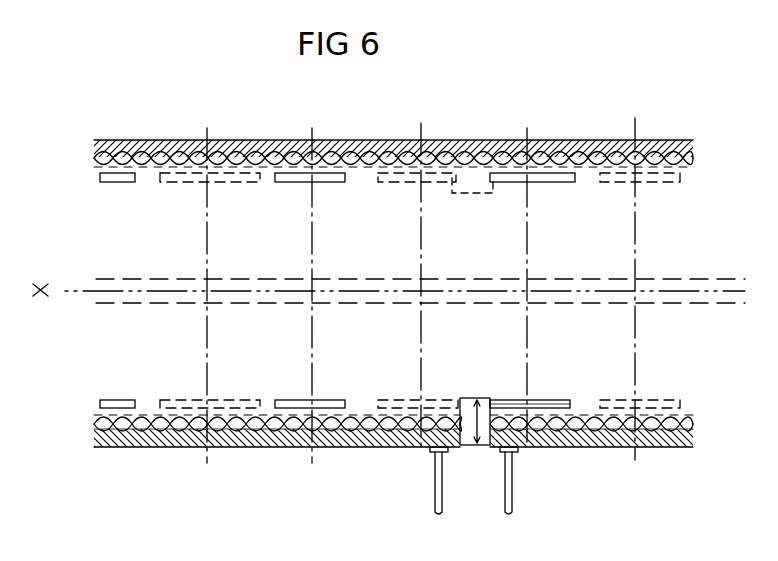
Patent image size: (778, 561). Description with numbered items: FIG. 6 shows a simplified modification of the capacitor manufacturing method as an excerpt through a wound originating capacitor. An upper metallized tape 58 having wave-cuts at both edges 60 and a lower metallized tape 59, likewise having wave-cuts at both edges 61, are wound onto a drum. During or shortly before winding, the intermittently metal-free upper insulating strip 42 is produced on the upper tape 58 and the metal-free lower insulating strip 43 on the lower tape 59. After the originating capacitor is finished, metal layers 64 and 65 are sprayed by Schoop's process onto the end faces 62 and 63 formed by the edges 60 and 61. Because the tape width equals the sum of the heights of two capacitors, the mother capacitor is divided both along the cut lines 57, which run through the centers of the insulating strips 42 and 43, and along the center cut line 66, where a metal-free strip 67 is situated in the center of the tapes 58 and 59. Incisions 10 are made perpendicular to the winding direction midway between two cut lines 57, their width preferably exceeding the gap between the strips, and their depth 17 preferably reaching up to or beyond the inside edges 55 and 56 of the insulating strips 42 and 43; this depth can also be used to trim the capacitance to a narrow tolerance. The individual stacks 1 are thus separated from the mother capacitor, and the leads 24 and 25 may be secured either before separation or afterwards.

The stack 1 is at (530, 346).
The incision 10 is at (470, 192).
The depth of the incision 17 is at (468, 398).
The lead 24 is at (440, 510).
The lead 25 is at (510, 508).
The upper insulating strip 42 is at (560, 183).
The lower insulating strip 43 is at (620, 184).
The inside edge of the upper insulating strip 55 is at (507, 402).
The inside edge of the lower insulating strip 56 is at (433, 402).
The cut line 57 is at (317, 130).
The upper metallized tape 58 is at (543, 385).
The lower metallized tape 59 is at (632, 392).
The edges of the upper metallized tape 60 is at (572, 150).
The edges of the lower metallized tape 61 is at (613, 148).
The end face 62 is at (371, 438).
The end face 63 is at (392, 142).
The metal layer 64 is at (393, 440).
The metal layer 65 is at (410, 142).
The center cut line 66 is at (652, 290).
The metal-free strip 67 is at (584, 290).